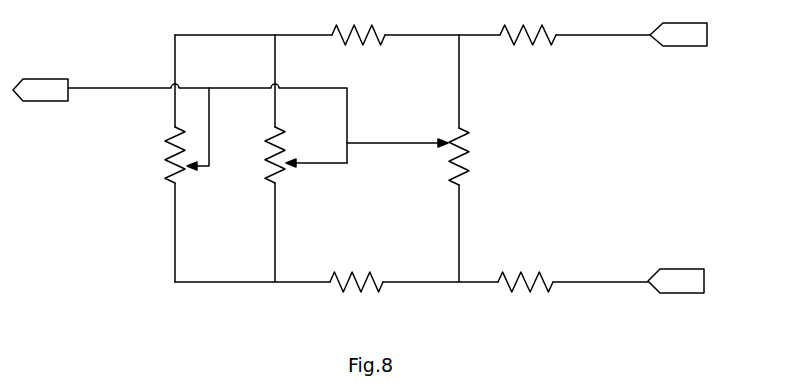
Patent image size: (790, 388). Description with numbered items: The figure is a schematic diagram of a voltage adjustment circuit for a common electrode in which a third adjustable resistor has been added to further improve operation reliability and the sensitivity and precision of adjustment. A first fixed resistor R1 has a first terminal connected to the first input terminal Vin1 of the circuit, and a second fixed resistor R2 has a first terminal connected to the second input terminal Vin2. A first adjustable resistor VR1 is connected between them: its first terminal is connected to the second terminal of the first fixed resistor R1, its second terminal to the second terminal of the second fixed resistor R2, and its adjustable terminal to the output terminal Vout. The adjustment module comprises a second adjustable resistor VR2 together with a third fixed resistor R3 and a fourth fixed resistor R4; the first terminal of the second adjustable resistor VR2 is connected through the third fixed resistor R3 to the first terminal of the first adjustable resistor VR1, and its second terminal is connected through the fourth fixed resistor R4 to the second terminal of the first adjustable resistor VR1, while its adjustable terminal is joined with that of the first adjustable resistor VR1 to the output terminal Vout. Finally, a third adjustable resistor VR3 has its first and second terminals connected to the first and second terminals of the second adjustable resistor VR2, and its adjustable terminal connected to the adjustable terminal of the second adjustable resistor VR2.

The first fixed resistor R1 is at (528, 48).
The second fixed resistor R2 is at (525, 294).
The third fixed resistor R3 is at (358, 48).
The fourth fixed resistor R4 is at (356, 294).
The first adjustable resistor VR1 is at (473, 156).
The second adjustable resistor VR2 is at (258, 155).
The third adjustable resistor VR3 is at (158, 155).
The output terminal Vout is at (40, 80).
The first input terminal Vin1 is at (695, 36).
The second input terminal Vin2 is at (694, 282).